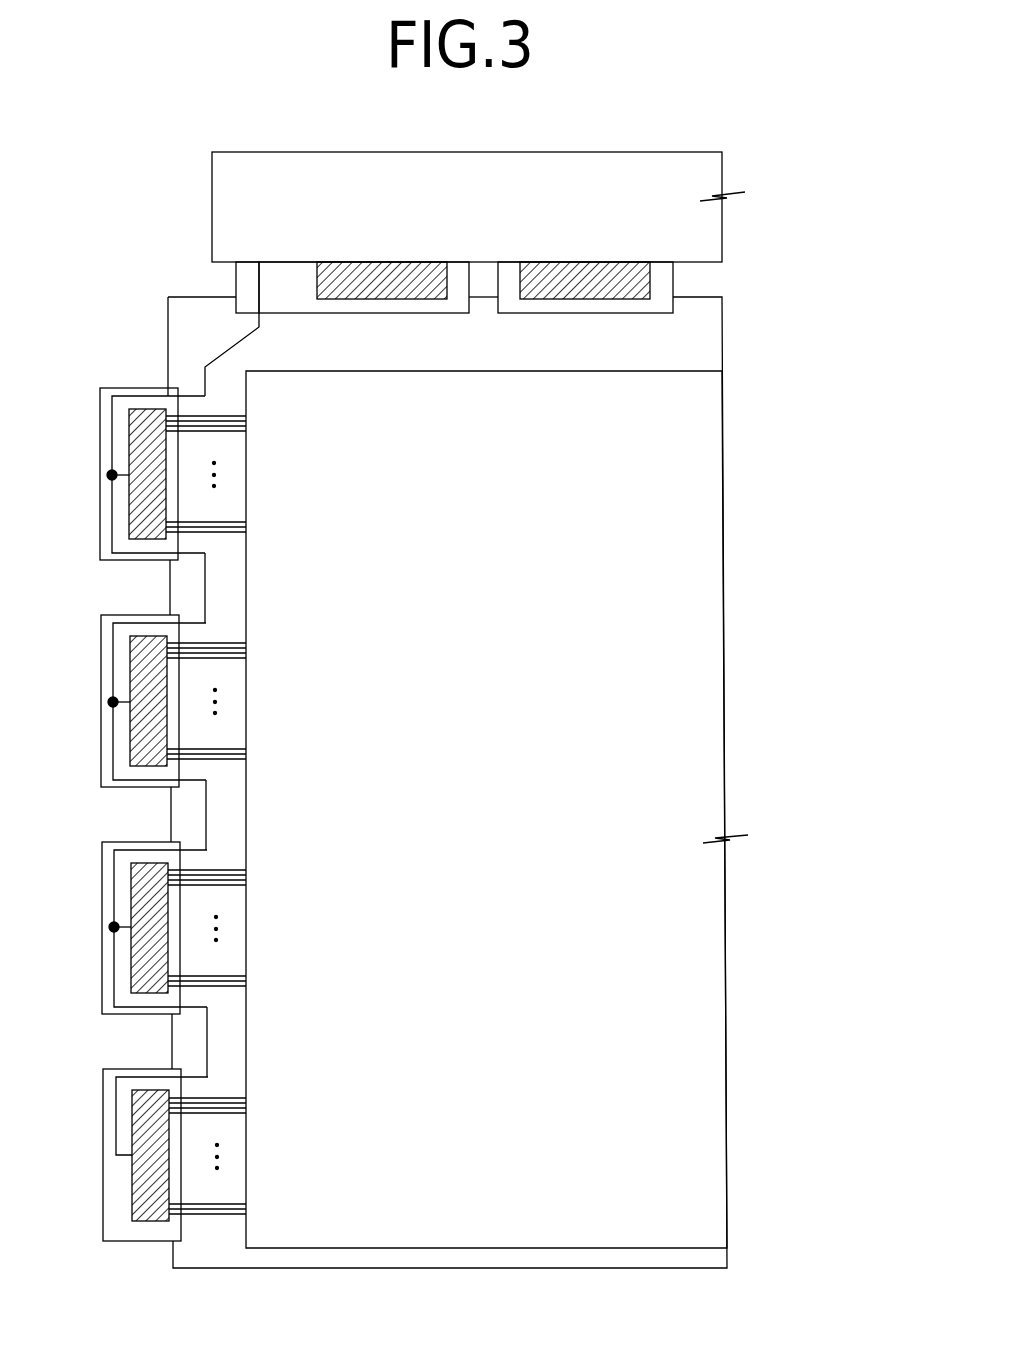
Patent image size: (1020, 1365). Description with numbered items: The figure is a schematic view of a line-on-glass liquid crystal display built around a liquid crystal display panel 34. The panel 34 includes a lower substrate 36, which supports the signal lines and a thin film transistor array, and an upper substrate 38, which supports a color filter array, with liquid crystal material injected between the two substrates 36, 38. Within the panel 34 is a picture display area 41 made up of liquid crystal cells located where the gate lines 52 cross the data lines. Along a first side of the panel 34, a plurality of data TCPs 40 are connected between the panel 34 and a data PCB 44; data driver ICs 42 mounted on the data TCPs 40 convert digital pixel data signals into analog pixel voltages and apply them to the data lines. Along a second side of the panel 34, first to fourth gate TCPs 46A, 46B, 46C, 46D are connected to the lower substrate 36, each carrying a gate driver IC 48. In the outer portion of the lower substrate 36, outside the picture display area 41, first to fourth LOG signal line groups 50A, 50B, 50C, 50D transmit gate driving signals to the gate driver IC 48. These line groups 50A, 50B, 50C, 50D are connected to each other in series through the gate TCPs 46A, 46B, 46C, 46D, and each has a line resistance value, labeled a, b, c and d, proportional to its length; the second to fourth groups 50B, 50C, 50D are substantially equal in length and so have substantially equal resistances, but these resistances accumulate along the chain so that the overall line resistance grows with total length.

The liquid crystal display panel 34 is at (788, 761).
The lower substrate 36 is at (712, 351).
The upper substrate 38 is at (707, 413).
The data TCPs 40 is at (675, 272).
The picture display area 41 is at (482, 664).
The data driver ICs 42 is at (541, 262).
The data PCB 44 is at (657, 160).
The first gate TCP 46A is at (161, 474).
The second gate TCP 46B is at (107, 670).
The third gate TCP 46C is at (110, 888).
The fourth gate TCP 46D is at (108, 1115).
The gate driver IC 48 is at (133, 512).
The first LOG signal line group 50A is at (228, 348).
The second LOG signal line group 50B is at (203, 563).
The third LOG signal line group 50C is at (206, 792).
The fourth LOG signal line group 50D is at (207, 1018).
The gate lines 52 is at (234, 417).